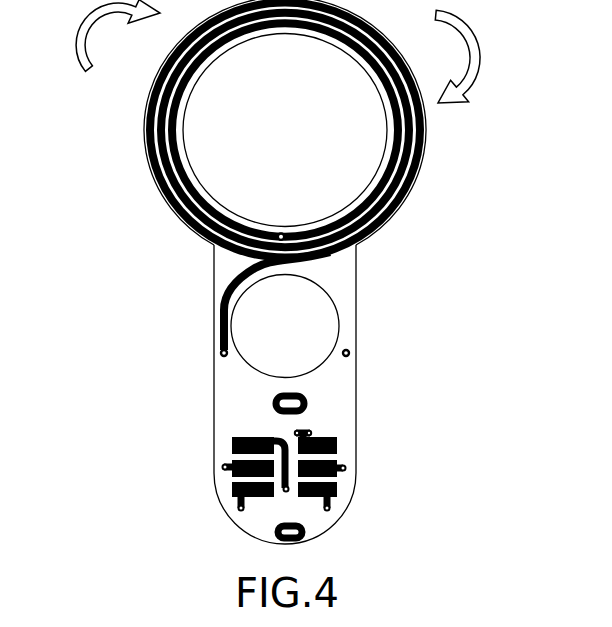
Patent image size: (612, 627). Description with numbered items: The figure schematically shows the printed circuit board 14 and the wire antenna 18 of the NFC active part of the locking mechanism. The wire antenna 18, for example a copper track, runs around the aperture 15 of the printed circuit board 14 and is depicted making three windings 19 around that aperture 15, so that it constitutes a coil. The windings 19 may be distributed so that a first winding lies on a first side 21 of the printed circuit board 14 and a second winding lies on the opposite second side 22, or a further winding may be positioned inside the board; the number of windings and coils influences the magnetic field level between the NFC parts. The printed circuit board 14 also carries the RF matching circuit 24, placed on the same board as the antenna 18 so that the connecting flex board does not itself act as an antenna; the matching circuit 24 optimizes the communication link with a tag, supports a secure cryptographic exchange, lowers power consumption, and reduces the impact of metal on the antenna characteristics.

The printed circuit board 14 is at (343, 282).
The aperture 15 is at (360, 146).
The wire antenna 18 is at (166, 214).
The winding 19 is at (205, 228).
The first side 21 is at (437, 51).
The second side 22 is at (110, 56).
The RF matching circuit 24 is at (346, 466).